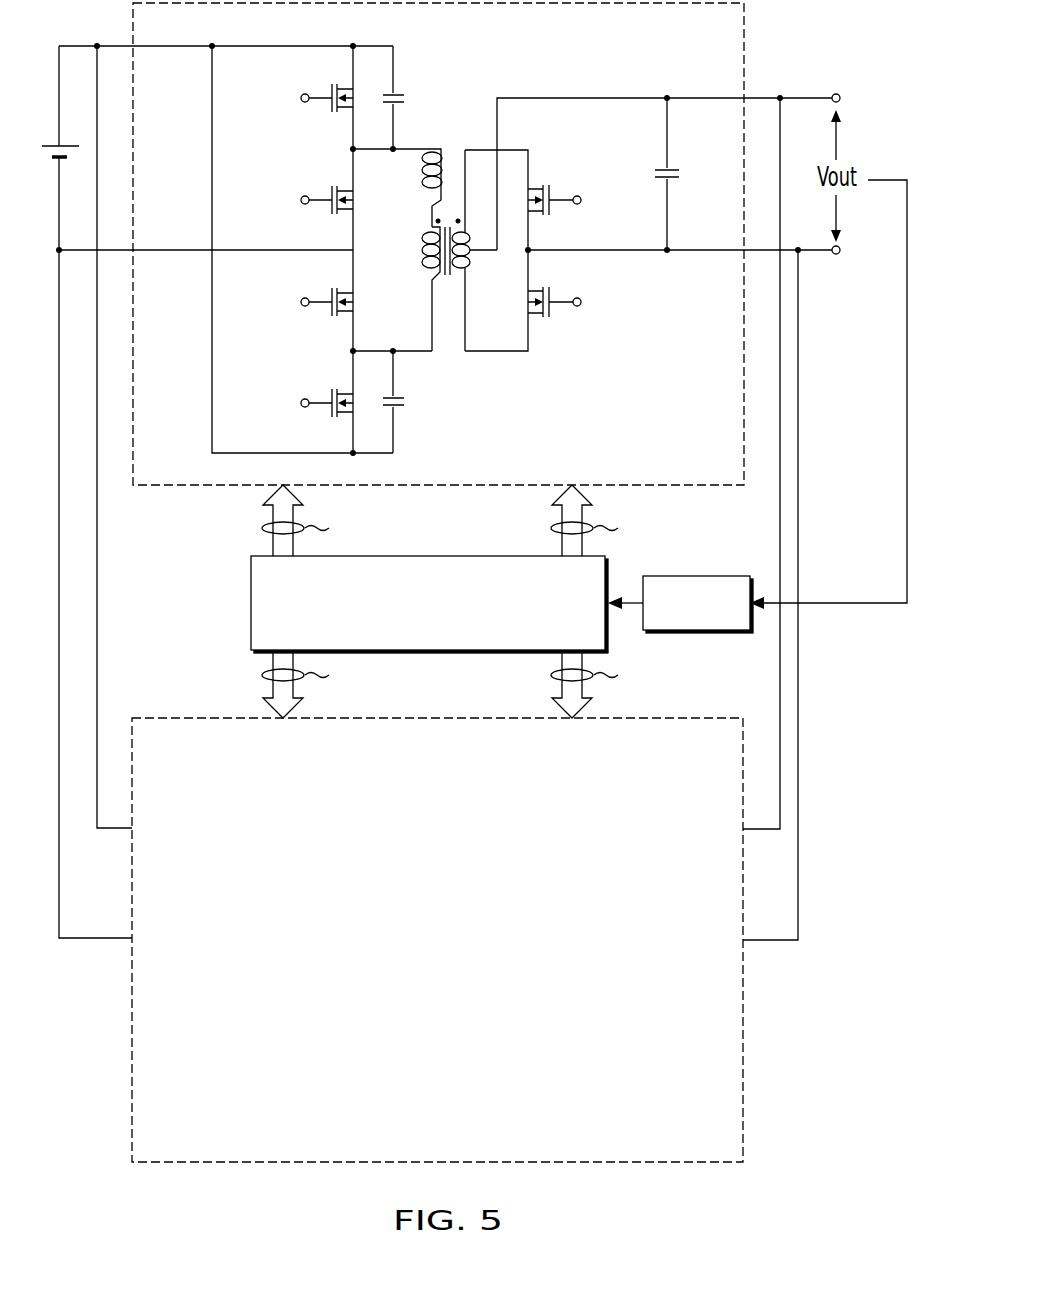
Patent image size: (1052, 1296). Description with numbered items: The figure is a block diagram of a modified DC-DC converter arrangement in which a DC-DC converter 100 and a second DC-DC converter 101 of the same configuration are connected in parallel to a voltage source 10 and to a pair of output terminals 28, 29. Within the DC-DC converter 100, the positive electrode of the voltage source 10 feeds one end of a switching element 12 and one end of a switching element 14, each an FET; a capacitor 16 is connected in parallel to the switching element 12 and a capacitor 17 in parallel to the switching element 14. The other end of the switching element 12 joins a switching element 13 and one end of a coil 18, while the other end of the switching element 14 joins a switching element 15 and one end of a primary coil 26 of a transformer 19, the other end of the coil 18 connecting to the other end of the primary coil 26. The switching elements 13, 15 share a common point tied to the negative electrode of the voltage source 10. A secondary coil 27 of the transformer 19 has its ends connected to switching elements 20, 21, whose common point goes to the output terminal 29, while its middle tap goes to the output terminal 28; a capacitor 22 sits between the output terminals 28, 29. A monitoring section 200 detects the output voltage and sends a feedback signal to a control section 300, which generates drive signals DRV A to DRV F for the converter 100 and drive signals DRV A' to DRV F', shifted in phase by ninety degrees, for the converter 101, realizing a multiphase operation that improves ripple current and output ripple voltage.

The voltage source 10 is at (46, 150).
The switching element 12 is at (356, 95).
The switching element 13 is at (362, 200).
The switching element 14 is at (357, 408).
The switching element 15 is at (362, 302).
The capacitor 16 is at (410, 97).
The capacitor 17 is at (410, 403).
The coil 18 is at (441, 157).
The transformer 19 is at (436, 266).
The switching element 20 is at (541, 184).
The switching element 21 is at (541, 318).
The capacitor 22 is at (680, 170).
The primary coil 26 is at (418, 253).
The secondary coil 27 is at (473, 273).
The output terminal 28 is at (842, 98).
The output terminal 29 is at (842, 250).
The DC-DC converter 100 is at (745, 22).
The DC-DC converter 101 is at (745, 1110).
The monitoring section 200 is at (692, 632).
The control section 300 is at (250, 603).